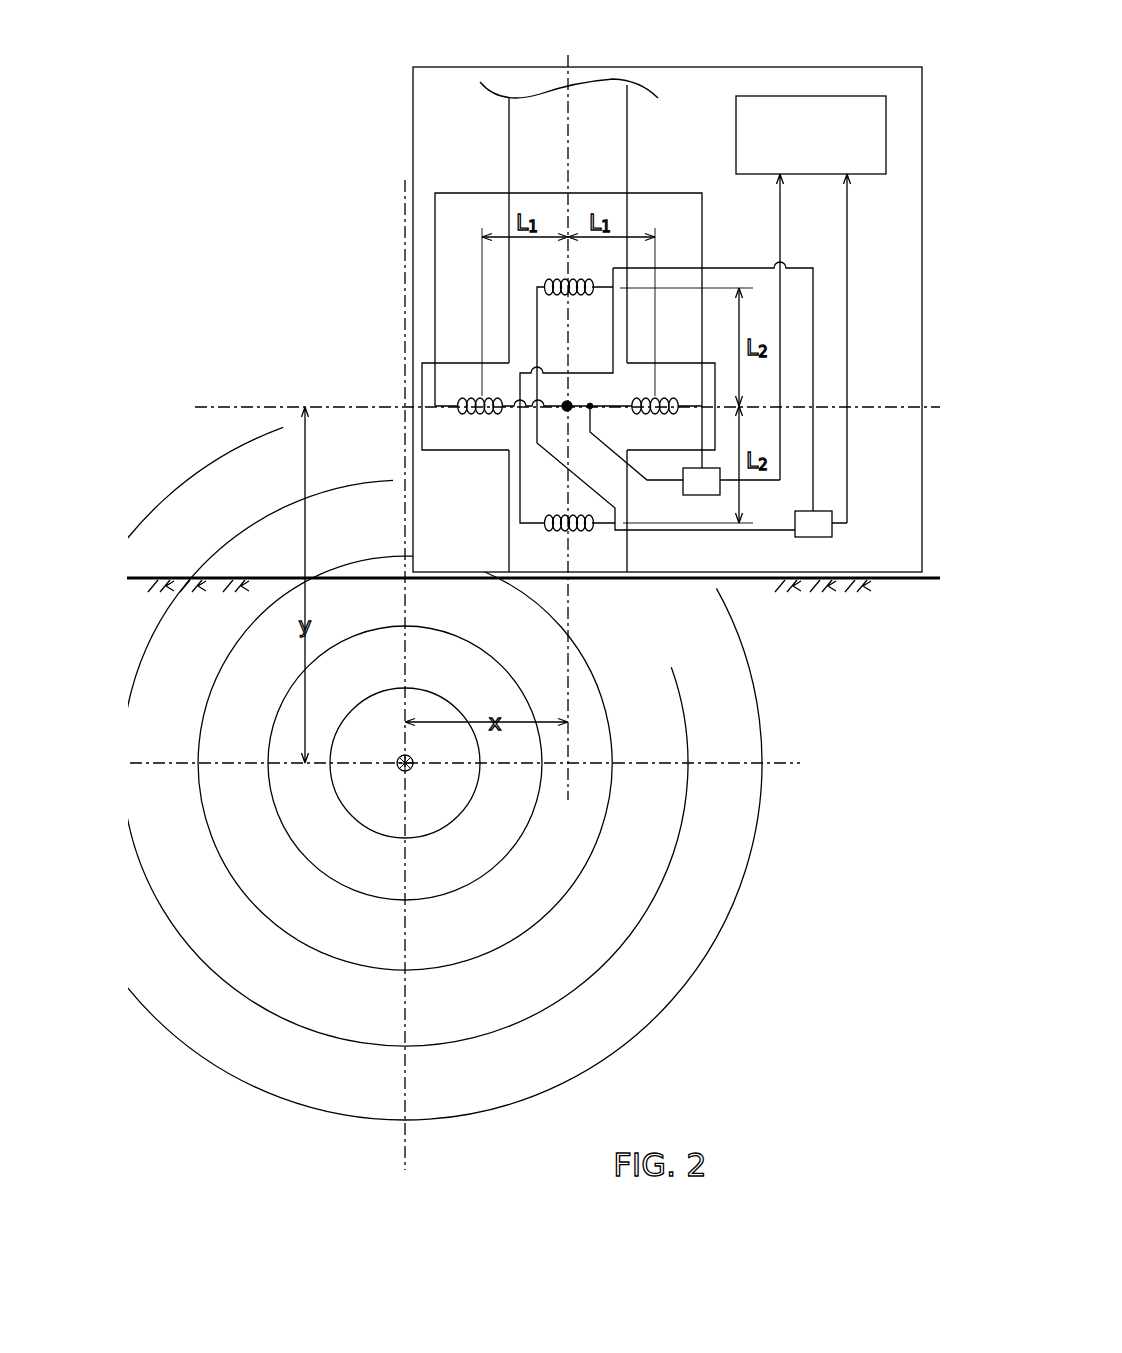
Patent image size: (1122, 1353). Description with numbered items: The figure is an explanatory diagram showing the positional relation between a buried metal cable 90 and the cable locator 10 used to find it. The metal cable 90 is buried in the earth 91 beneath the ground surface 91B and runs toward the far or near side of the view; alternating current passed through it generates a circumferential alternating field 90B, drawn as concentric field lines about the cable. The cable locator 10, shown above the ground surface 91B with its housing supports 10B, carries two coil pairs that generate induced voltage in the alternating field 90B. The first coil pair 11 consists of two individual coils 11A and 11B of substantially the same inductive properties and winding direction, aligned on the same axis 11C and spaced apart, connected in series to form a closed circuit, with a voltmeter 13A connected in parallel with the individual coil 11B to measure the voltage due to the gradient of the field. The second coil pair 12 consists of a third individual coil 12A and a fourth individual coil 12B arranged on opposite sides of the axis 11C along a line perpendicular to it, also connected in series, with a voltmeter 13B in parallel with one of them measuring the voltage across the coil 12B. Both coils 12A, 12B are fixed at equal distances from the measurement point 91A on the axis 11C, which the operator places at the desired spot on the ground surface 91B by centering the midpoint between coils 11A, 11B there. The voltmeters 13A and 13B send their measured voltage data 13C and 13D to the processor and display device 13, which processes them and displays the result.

The cable locator 10 is at (859, 57).
The housing support 10B is at (511, 147).
The first coil pair 11 is at (588, 631).
The individual coil 11A is at (480, 414).
The individual coil 11B is at (655, 414).
The axis 11C is at (222, 405).
The second coil pair 12 is at (333, 288).
The third individual coil 12A is at (543, 515).
The fourth individual coil 12B is at (543, 289).
The processor and display device 13 is at (736, 122).
The voltmeter 13A is at (706, 495).
The voltmeter 13B is at (815, 538).
The measured voltage data 13C is at (780, 324).
The measured voltage data 13D is at (847, 372).
The metal cable 90 is at (418, 775).
The alternating field 90B is at (578, 883).
The earth 91 is at (367, 608).
The measurement point 91A is at (569, 403).
The ground surface 91B is at (176, 578).